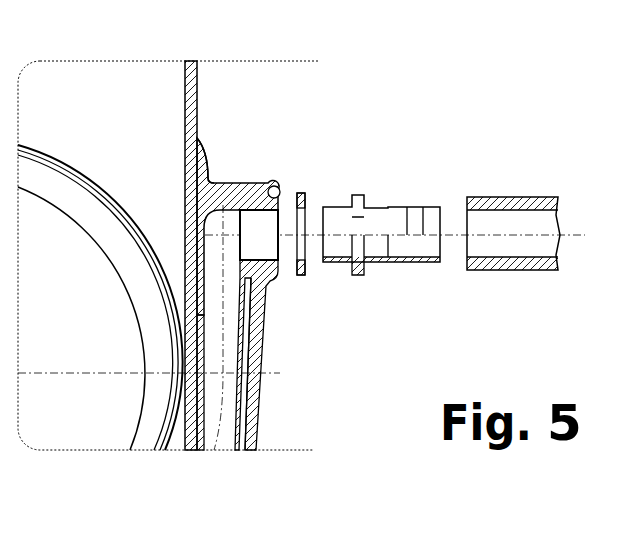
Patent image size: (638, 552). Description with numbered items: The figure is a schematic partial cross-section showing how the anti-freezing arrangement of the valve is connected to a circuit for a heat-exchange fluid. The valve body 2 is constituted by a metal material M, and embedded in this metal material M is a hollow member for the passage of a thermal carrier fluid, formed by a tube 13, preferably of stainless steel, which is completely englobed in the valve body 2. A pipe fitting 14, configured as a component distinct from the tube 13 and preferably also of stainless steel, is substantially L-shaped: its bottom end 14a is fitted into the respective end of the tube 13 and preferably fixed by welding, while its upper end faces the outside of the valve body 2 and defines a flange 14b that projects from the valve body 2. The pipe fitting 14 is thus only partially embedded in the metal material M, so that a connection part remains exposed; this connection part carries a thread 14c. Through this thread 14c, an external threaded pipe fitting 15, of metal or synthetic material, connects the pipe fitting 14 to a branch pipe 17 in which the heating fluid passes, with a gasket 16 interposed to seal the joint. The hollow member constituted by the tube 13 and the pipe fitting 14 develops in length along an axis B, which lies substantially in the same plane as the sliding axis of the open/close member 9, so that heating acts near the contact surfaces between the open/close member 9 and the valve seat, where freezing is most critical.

The valve body 2 is at (204, 97).
The open/close member 9 is at (50, 153).
The tube 13 is at (203, 426).
The pipe fitting 14 is at (276, 186).
The bottom end 14a is at (196, 290).
The flange 14b is at (281, 194).
The thread 14c is at (278, 260).
The external threaded pipe fitting 15 is at (420, 279).
The gasket 16 is at (311, 186).
The branch pipe 17 is at (521, 181).
The axis B is at (222, 402).
The metal material M is at (186, 197).